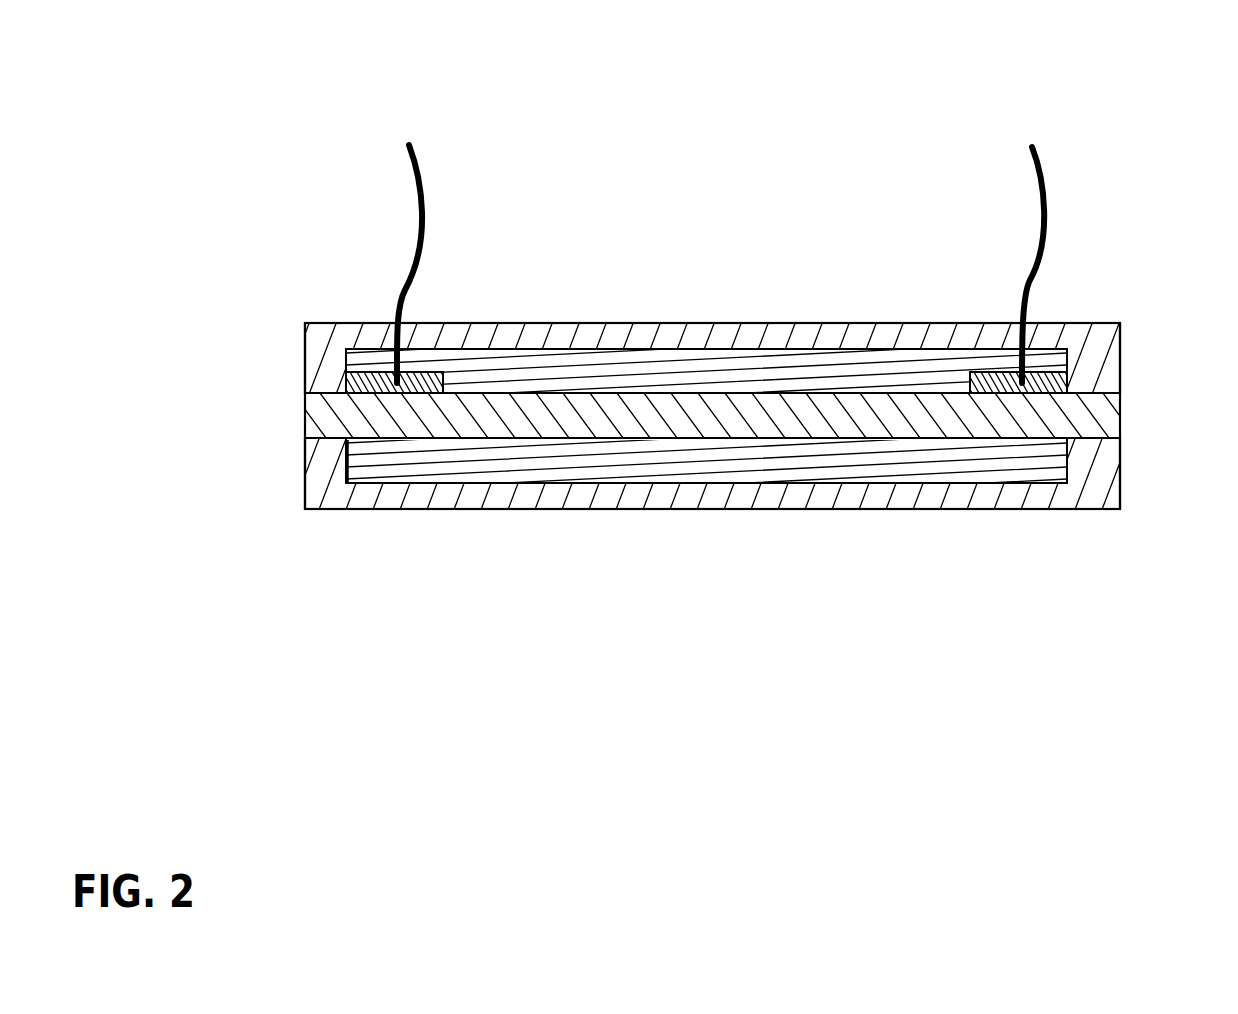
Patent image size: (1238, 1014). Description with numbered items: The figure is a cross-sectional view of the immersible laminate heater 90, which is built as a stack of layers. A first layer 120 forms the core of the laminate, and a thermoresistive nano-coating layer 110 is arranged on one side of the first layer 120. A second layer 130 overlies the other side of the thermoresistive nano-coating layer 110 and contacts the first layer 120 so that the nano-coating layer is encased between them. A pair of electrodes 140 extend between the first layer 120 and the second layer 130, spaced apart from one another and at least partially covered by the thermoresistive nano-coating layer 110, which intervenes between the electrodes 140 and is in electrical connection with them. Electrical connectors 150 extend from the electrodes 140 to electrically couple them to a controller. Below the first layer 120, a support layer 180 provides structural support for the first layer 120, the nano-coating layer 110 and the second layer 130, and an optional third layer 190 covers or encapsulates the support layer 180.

The immersible laminate heater 90 is at (1052, 48).
The thermoresistive nano-coating layer 110 is at (713, 363).
The first layer 120 is at (318, 415).
The second layer 130 is at (1102, 337).
The electrodes 140 is at (347, 385).
The electrical connectors 150 is at (422, 178).
The support layer 180 is at (568, 466).
The third layer 190 is at (710, 500).